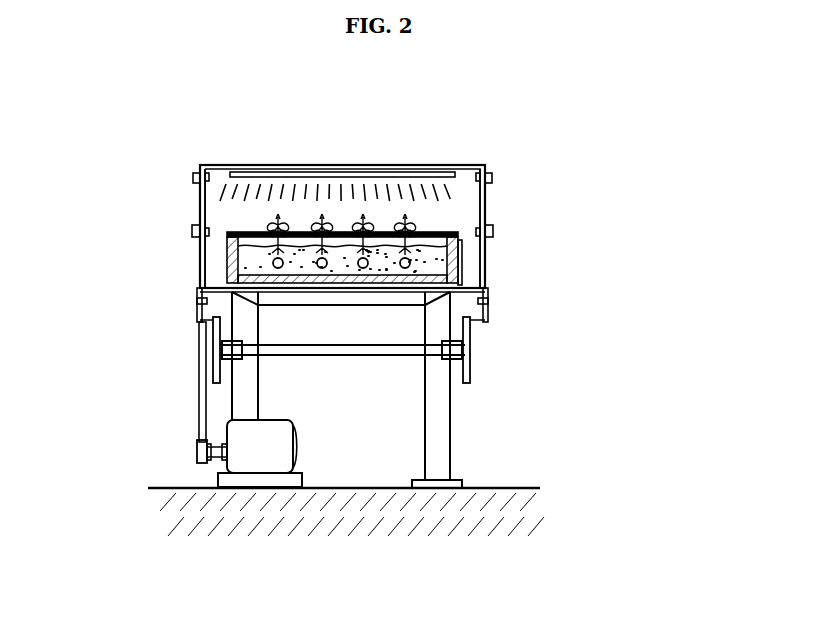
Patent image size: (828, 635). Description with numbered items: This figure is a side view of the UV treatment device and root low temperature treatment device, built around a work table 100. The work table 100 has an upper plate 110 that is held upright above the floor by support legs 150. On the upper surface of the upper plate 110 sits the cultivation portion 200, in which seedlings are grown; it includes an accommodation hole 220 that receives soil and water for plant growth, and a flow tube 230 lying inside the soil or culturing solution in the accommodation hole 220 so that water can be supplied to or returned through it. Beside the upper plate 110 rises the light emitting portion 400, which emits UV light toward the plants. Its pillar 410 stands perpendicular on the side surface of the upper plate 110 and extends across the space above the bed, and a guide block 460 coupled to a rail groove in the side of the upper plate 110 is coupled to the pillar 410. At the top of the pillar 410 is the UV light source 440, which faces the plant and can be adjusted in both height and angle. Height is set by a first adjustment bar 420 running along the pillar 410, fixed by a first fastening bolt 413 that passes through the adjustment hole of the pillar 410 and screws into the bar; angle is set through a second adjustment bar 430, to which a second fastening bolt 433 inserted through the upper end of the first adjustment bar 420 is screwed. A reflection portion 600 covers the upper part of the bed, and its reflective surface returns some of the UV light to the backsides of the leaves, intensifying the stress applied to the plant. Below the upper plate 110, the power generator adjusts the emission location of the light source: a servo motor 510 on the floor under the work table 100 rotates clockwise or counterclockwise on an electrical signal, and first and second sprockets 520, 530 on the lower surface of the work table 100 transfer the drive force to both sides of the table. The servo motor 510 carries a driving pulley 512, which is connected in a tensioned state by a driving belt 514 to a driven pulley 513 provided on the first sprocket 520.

The work table 100 is at (389, 442).
The upper plate 110 is at (463, 282).
The support legs 150 is at (443, 460).
The cultivation portion 200 is at (218, 270).
The accommodation hole 220 is at (253, 248).
The flow tube 230 is at (403, 258).
The light emitting portion 400 is at (236, 158).
The pillar 410 is at (196, 290).
The first fastening bolt 413 is at (192, 232).
The first adjustment bar 420 is at (200, 205).
The second adjustment bar 430 is at (328, 171).
The second fastening bolt 433 is at (193, 177).
The UV light source 440 is at (423, 171).
The guide block 460 is at (488, 302).
The servo motor 510 is at (255, 460).
The driving pulley 512 is at (197, 453).
The driven pulley 513 is at (212, 353).
The driving belt 514 is at (203, 412).
The first sprocket 520 is at (574, 358).
The second sprocket 530 is at (471, 367).
The reflection portion 600 is at (442, 213).